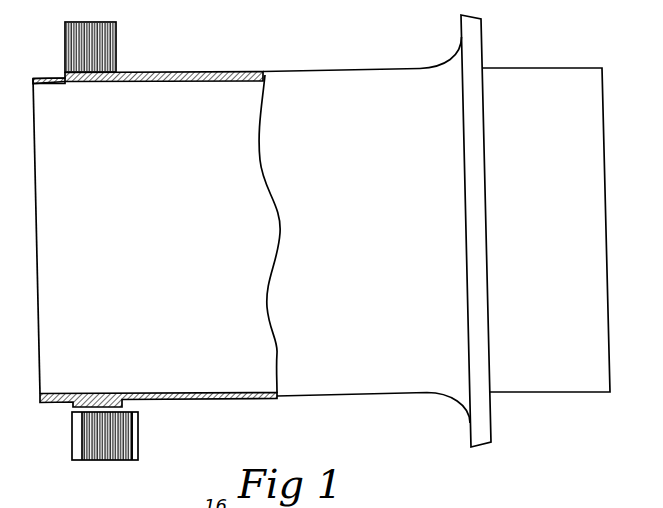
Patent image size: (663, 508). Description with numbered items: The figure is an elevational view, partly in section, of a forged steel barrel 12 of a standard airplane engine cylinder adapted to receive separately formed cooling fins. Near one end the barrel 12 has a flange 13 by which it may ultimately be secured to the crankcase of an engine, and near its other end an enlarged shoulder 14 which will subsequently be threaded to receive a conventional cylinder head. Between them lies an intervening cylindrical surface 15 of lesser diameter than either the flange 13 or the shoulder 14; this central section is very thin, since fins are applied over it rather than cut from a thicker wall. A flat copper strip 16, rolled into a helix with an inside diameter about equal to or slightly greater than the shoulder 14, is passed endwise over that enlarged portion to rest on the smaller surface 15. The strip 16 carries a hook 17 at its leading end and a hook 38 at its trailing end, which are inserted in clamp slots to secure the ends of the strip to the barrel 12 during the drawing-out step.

The barrel 12 is at (321, 230).
The flange 13 is at (468, 48).
The enlarged shoulder 14 is at (67, 75).
The cylindrical surface 15 is at (240, 72).
The strip 16 is at (115, 55).
The hook 17 is at (80, 433).
The hook 38 is at (134, 460).